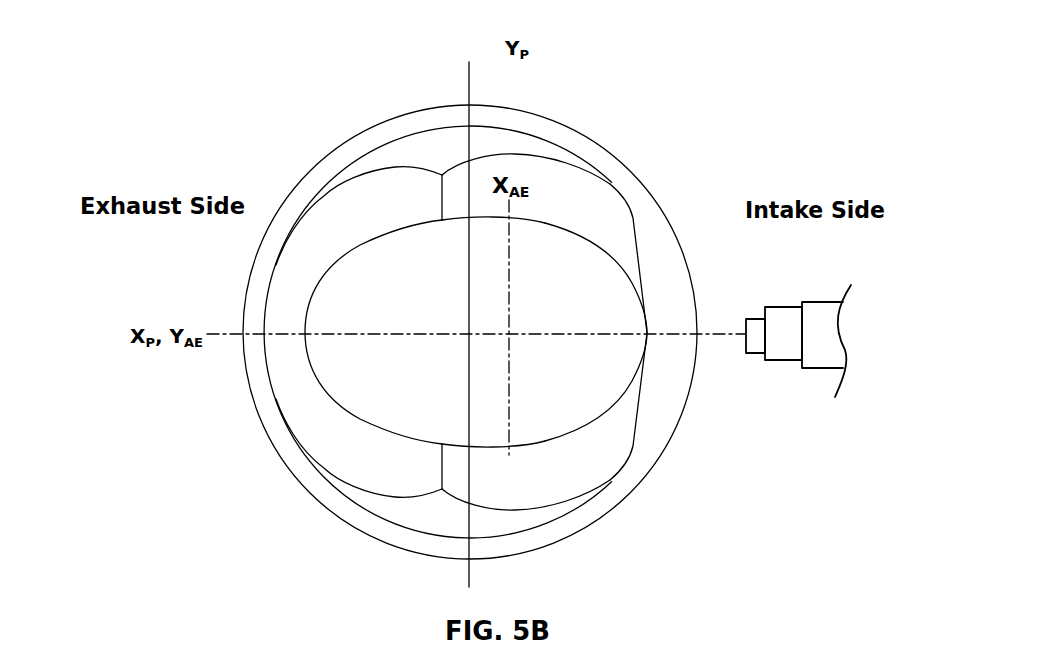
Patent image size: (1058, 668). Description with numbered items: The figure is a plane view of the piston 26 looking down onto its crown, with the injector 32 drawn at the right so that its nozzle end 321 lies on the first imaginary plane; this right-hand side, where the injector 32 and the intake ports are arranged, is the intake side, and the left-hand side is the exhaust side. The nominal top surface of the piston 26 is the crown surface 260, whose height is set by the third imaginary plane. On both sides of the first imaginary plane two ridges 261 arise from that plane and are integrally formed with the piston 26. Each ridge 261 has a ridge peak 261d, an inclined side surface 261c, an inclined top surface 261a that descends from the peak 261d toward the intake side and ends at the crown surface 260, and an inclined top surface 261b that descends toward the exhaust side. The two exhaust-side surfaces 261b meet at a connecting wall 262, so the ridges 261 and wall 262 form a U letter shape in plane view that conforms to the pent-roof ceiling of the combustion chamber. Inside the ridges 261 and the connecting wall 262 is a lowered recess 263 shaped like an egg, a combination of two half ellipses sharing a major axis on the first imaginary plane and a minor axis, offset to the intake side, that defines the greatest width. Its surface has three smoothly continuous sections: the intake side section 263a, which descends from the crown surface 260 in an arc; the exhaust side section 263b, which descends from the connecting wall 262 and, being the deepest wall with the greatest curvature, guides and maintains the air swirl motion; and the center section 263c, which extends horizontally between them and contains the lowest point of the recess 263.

The piston 26 is at (645, 157).
The crown surface 260 is at (655, 415).
The ridge 261 is at (451, 317).
The inclined top surface 261a is at (537, 193).
The inclined top surface 261b is at (403, 193).
The inclined side surface 261c is at (490, 146).
The ridge peak 261d is at (434, 198).
The connecting wall 262 is at (287, 287).
The lowered recess 263 is at (440, 316).
The intake side section 263a is at (632, 327).
The exhaust side section 263b is at (327, 365).
The center section 263c is at (464, 366).
The injector 32 is at (822, 355).
The nozzle end 321 is at (742, 344).